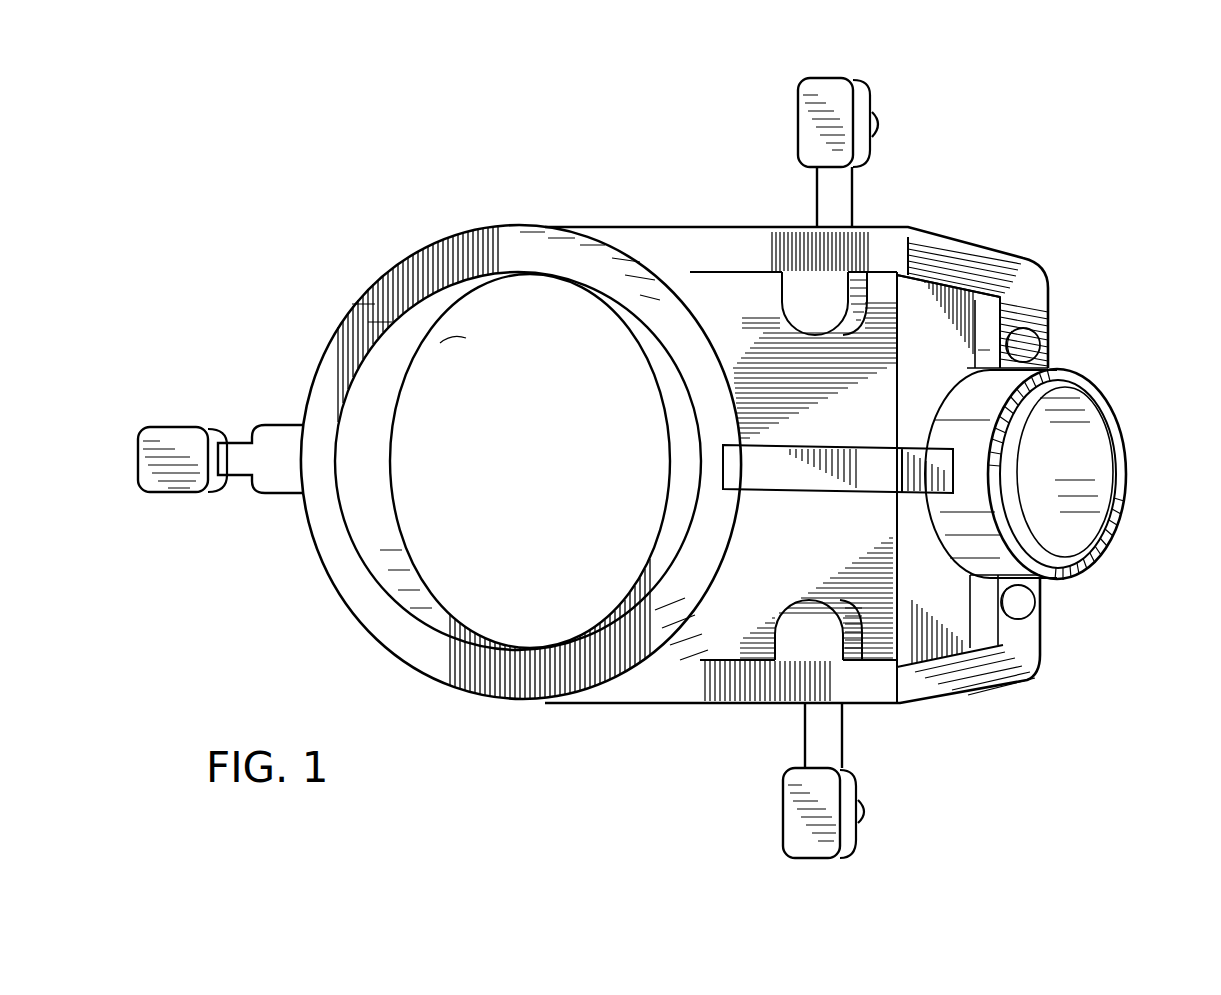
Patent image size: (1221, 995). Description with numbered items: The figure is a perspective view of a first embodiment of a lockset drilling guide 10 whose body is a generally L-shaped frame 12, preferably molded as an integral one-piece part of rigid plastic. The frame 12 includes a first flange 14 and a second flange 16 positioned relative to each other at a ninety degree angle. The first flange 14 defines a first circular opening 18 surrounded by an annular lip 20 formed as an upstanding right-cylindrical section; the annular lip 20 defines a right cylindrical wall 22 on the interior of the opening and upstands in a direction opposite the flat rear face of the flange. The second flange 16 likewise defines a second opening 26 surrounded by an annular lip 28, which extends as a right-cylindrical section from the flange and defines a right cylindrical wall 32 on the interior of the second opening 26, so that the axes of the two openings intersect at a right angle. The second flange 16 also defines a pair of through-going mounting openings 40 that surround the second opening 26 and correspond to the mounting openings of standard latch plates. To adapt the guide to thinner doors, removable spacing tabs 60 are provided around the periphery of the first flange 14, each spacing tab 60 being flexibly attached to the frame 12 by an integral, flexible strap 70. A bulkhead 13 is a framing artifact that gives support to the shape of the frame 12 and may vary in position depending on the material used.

The drilling guide 10 is at (1010, 160).
The frame 12 is at (947, 267).
The bulkhead 13 is at (767, 250).
The first flange 14 is at (725, 295).
The second flange 16 is at (950, 333).
The first circular opening 18 is at (543, 317).
The annular lip 20 is at (342, 352).
The right cylindrical wall 22 is at (408, 307).
The second opening 26 is at (1015, 465).
The annular lip 28 is at (1127, 518).
The right cylindrical wall 32 is at (1092, 463).
The mounting openings 40 is at (1042, 347).
The spacing tabs 60 is at (800, 102).
The flexible strap 70 is at (823, 185).